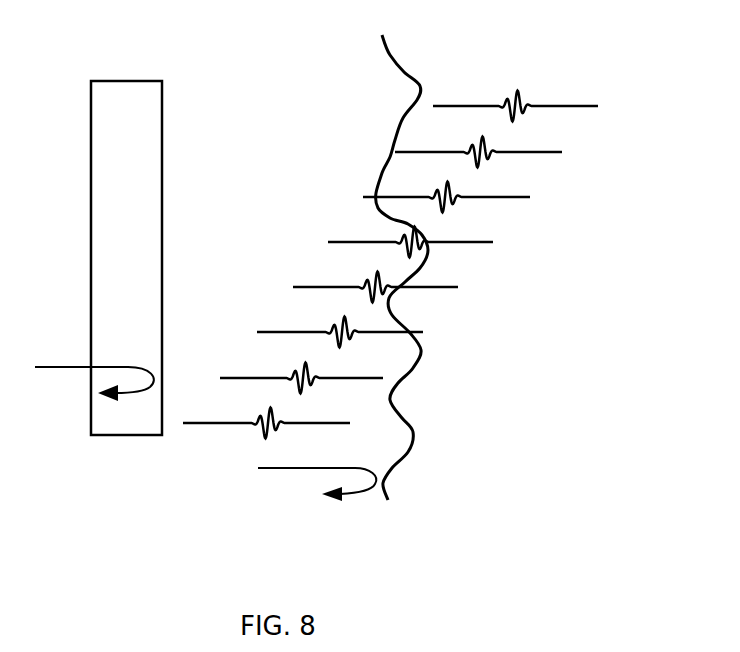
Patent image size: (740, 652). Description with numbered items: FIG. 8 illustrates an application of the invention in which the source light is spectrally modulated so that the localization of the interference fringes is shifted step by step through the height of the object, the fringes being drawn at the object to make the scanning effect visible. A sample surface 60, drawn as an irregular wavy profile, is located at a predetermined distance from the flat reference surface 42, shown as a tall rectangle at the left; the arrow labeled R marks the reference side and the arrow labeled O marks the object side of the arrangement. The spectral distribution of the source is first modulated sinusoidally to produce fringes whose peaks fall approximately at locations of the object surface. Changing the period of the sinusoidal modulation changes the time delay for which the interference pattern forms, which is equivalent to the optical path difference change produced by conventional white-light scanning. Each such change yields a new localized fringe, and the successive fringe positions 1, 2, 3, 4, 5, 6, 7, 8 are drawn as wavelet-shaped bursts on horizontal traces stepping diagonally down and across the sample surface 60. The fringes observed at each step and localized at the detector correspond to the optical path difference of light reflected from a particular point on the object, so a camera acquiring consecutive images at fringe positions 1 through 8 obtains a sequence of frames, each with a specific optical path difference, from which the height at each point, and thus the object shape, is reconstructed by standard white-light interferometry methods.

The reference surface 42 is at (162, 116).
The sample surface 60 is at (408, 73).
The fringe position 1 is at (598, 106).
The fringe position 2 is at (562, 152).
The fringe position 3 is at (530, 197).
The fringe position 4 is at (493, 242).
The fringe position 5 is at (458, 287).
The fringe position 6 is at (423, 332).
The fringe position 7 is at (383, 378).
The fringe position 8 is at (350, 423).
The receiver direction R is at (133, 396).
The origin / source direction O is at (370, 493).